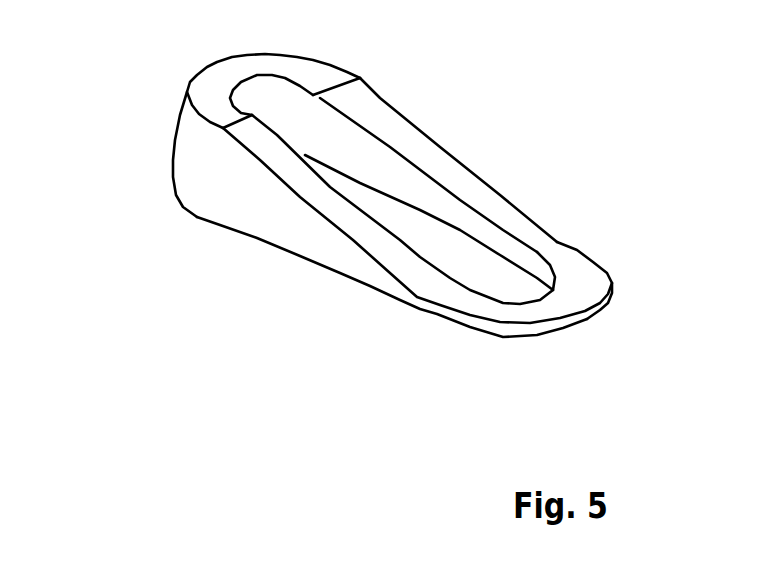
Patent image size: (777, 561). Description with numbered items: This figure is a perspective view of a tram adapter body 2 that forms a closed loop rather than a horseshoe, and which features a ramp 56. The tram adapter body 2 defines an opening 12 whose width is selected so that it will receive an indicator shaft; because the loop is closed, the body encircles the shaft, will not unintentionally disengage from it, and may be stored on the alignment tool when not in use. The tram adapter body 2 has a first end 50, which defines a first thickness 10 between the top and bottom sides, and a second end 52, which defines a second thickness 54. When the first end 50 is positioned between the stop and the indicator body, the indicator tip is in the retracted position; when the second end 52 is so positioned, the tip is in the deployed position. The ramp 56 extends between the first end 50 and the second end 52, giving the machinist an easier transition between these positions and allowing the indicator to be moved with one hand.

The tram adapter body 2 is at (357, 73).
The first thickness 10 is at (175, 117).
The opening 12 is at (440, 243).
The first end 50 is at (187, 90).
The second end 52 is at (610, 271).
The second thickness 54 is at (508, 318).
The ramp 56 is at (300, 177).